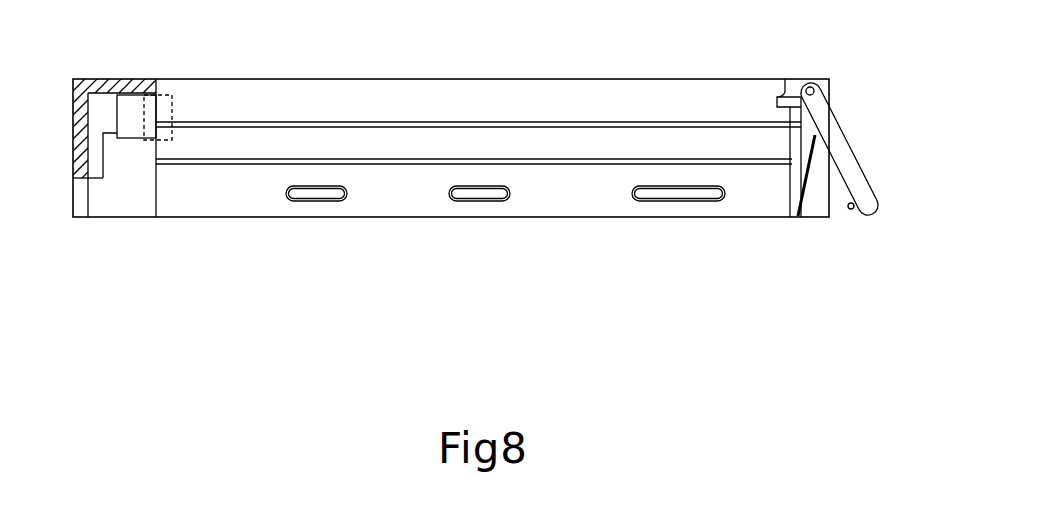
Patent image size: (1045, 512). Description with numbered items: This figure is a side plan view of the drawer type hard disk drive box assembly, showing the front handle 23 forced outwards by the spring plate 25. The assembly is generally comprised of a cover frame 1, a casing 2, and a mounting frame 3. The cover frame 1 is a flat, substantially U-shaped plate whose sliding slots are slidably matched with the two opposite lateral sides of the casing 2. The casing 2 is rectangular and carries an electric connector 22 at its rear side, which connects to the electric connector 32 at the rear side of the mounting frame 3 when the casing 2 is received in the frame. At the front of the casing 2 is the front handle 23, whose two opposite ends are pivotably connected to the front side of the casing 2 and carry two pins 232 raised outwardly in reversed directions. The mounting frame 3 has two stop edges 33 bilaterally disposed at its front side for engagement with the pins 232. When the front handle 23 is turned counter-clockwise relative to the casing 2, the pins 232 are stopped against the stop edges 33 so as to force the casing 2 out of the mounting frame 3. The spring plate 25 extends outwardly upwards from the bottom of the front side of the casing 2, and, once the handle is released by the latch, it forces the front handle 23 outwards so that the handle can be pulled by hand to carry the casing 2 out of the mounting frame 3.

The cover frame 1 is at (272, 123).
The casing 2 is at (532, 205).
The mounting frame 3 is at (80, 217).
The electric connector 22 is at (152, 107).
The front handle 23 is at (870, 167).
The front spring plate 25 is at (808, 193).
The electric connector 32 is at (127, 140).
The stop edges 33 is at (782, 95).
The pins 232 is at (810, 83).